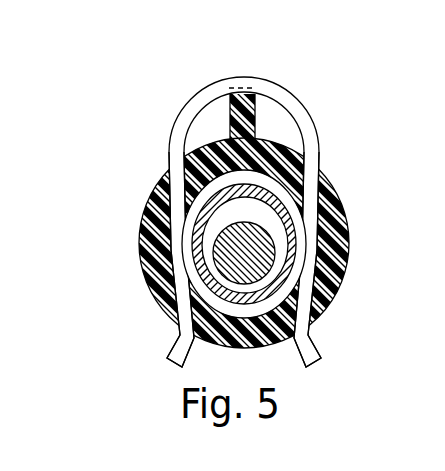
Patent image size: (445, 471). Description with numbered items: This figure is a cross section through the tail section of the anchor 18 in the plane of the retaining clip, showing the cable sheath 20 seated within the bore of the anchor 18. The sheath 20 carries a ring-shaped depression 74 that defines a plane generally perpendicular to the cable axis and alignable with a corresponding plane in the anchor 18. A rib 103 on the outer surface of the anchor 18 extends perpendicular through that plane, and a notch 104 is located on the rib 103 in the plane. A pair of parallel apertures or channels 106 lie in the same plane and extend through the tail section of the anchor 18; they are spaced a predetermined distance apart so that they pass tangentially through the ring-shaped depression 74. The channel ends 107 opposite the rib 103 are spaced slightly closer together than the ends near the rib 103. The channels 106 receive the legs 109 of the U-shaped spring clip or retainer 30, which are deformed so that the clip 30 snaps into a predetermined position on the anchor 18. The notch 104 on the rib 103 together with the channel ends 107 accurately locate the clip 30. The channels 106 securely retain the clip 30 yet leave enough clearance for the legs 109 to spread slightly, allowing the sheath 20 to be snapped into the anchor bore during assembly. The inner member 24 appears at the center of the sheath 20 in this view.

The anchor 18 is at (352, 205).
The sheath 20 is at (288, 188).
The conductor core 24 is at (274, 262).
The U-shaped spring clip 30 is at (297, 92).
The ring-shaped depression 74 is at (205, 203).
The rib 103 is at (230, 113).
The notch 104 is at (240, 87).
The channels 106 is at (333, 228).
The channel ends 107 is at (174, 352).
The legs 109 is at (170, 168).